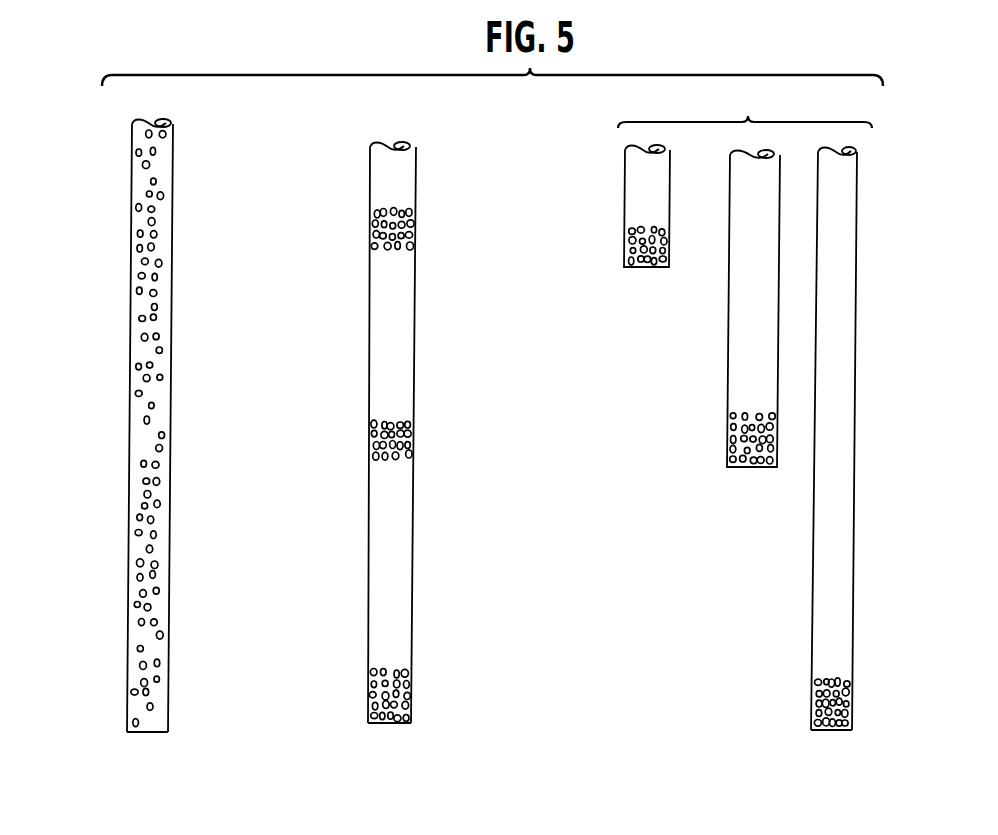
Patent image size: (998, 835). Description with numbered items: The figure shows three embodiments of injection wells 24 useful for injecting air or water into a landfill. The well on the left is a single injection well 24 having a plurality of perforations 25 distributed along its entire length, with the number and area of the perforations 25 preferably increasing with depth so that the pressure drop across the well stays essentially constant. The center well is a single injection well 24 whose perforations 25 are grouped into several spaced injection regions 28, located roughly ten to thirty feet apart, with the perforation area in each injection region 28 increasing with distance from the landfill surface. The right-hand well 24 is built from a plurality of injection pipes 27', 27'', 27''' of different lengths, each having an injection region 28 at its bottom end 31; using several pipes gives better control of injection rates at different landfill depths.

The injection well 24 is at (173, 294).
The perforations 25 is at (146, 352).
The injection pipe 27' is at (606, 206).
The injection pipe 27'' is at (711, 308).
The injection pipe 27''' is at (892, 438).
The injection region 28 is at (421, 208).
The bottom end 31 is at (155, 732).